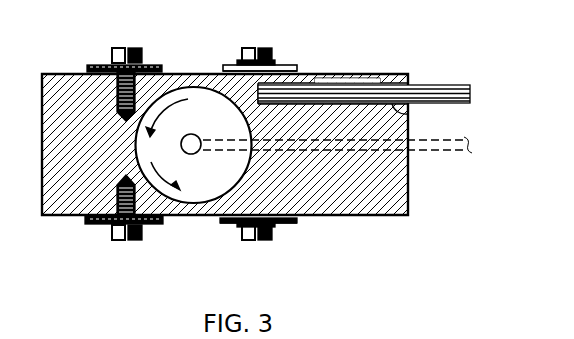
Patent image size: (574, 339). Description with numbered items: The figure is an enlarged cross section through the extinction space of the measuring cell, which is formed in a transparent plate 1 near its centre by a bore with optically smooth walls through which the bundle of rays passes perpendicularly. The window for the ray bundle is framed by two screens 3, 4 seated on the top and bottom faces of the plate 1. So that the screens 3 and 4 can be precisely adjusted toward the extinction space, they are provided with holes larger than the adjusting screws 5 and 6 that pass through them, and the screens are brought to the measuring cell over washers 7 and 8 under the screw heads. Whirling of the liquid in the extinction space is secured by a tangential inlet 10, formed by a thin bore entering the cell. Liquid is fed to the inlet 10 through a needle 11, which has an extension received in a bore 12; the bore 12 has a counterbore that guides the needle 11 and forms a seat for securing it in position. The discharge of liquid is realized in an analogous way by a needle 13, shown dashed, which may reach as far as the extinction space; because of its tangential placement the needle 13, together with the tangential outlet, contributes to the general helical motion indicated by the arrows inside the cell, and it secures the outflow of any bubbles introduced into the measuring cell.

The transparent plate 1 is at (392, 72).
The screen 3 is at (297, 67).
The screen 4 is at (163, 65).
The adjusting screw 5 is at (267, 50).
The adjusting screw 6 is at (113, 50).
The washer 7 is at (140, 65).
The washer 8 is at (276, 62).
The tangential inlet 10 is at (243, 98).
The needle 11 is at (458, 85).
The bore 12 is at (408, 114).
The needle 13 is at (472, 146).